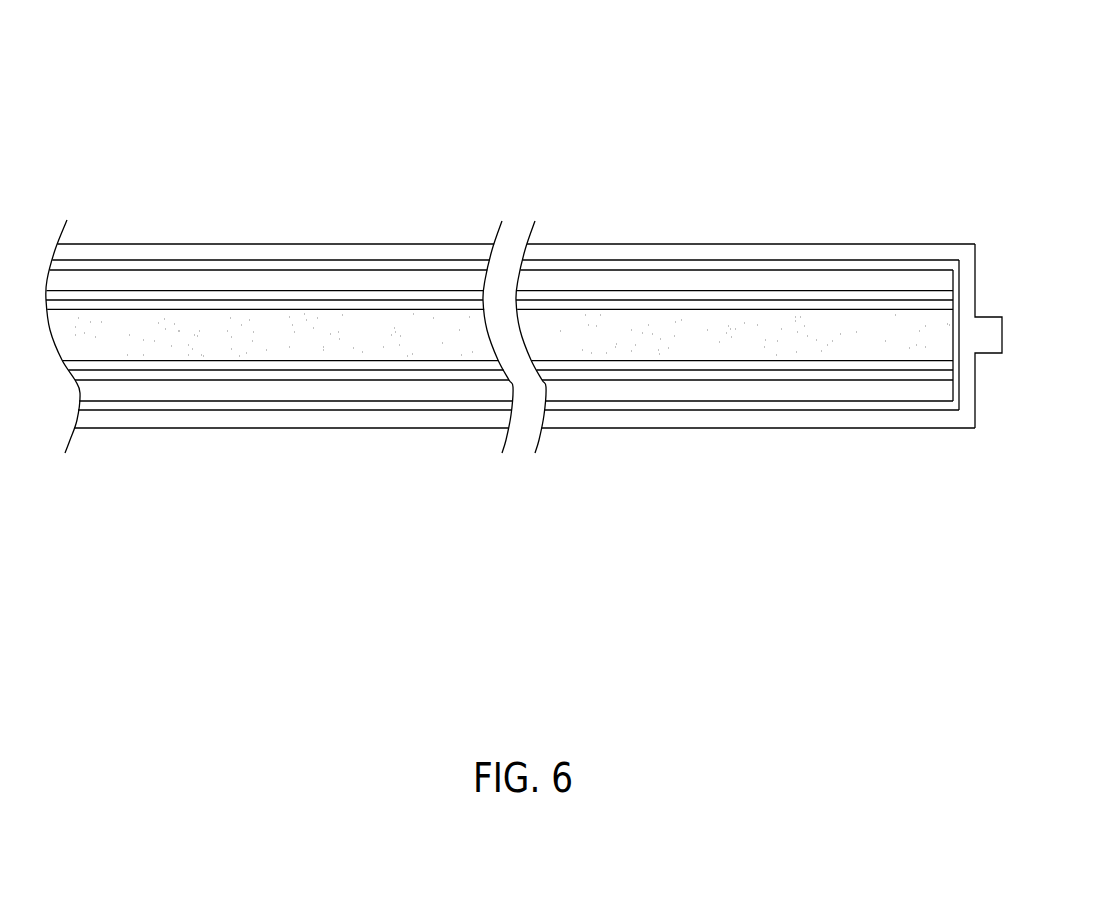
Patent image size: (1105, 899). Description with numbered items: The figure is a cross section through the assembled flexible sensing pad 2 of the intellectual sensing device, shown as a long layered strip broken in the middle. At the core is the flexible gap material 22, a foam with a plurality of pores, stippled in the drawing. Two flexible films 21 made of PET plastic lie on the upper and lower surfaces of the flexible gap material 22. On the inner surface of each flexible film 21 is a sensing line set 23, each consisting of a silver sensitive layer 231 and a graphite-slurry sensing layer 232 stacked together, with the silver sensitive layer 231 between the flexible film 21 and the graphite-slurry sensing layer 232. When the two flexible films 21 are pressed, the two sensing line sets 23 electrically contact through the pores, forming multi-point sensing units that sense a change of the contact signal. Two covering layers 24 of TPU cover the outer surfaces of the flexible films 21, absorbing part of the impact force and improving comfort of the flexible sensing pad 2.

The flexible sensing pad 2 is at (964, 138).
The flexible film 21 is at (268, 280).
The flexible gap material 22 is at (412, 335).
The sensing line set 23 is at (783, 152).
The silver sensitive layer 231 is at (633, 298).
The graphite-slurry sensing layer 232 is at (717, 307).
The covering layer 24 is at (135, 243).